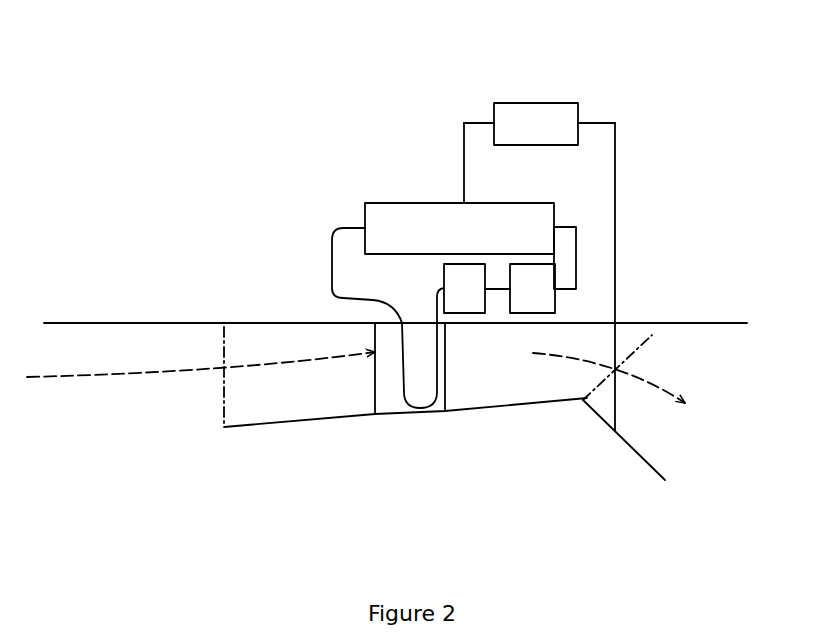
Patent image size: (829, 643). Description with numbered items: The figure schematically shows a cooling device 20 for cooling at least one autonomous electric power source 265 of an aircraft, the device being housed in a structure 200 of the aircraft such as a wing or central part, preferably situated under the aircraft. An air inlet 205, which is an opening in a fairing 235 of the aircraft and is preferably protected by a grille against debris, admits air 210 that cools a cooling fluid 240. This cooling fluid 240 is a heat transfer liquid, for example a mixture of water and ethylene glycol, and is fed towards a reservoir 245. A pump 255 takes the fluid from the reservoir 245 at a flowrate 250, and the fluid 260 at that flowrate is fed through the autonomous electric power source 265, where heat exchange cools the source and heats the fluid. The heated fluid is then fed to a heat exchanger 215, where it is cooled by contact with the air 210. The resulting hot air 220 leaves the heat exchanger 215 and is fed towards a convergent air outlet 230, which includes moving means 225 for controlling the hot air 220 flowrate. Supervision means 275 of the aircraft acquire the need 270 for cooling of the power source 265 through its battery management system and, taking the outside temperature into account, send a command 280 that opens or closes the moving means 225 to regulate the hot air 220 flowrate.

The cooling device 20 is at (205, 103).
The structure 200 is at (117, 323).
The air inlet 205 is at (222, 393).
The air 210 is at (265, 363).
The heat exchanger 215 is at (388, 413).
The hot air 220 is at (662, 393).
The moving means for controlling the air flowrate 225 is at (608, 433).
The air outlet 230 is at (652, 335).
The fairing 235 is at (310, 425).
The cooling fluid 240 is at (433, 413).
The fluid reservoir 245 is at (451, 297).
The flowrate 250 is at (496, 290).
The pump 255 is at (545, 303).
The fluid 260 is at (577, 243).
The autonomous electric power source 265 is at (377, 223).
The need for cooling 270 is at (483, 122).
The supervision means 275 is at (535, 118).
The command 280 is at (597, 122).